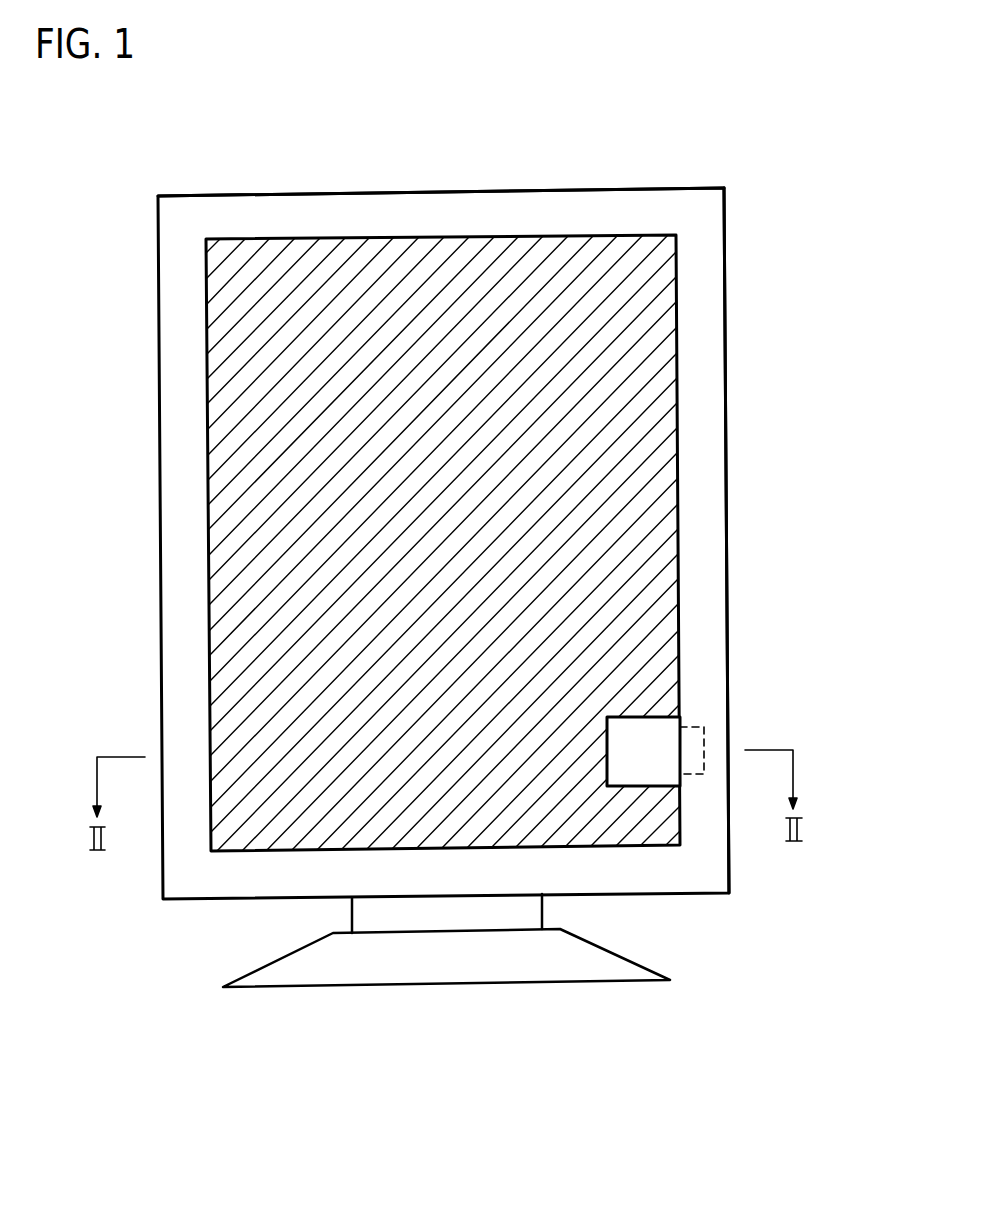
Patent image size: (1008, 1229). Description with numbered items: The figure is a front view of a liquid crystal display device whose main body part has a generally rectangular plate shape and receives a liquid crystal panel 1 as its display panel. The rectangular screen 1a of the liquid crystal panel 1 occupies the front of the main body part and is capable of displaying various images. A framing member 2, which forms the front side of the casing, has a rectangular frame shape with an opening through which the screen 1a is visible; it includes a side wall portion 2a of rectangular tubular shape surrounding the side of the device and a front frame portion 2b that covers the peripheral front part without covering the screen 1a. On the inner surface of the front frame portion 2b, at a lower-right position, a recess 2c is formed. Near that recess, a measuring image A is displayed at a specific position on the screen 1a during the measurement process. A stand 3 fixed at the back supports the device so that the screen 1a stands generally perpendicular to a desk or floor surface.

The liquid crystal panel 1 is at (498, 543).
The screen 1a is at (668, 323).
The framing member 2 is at (651, 182).
The side wall portion 2a is at (727, 253).
The front frame portion 2b is at (512, 205).
The recess 2c is at (693, 726).
The measuring image A is at (633, 717).
The stand 3 is at (515, 968).